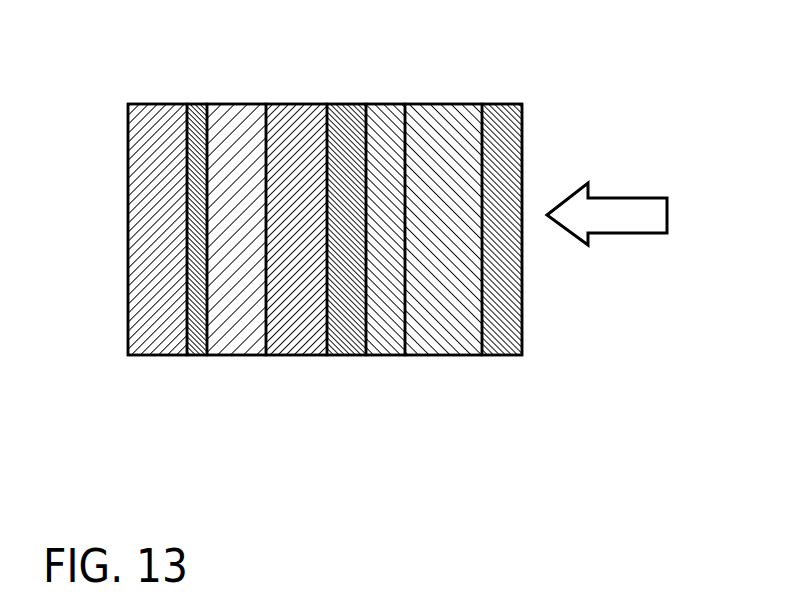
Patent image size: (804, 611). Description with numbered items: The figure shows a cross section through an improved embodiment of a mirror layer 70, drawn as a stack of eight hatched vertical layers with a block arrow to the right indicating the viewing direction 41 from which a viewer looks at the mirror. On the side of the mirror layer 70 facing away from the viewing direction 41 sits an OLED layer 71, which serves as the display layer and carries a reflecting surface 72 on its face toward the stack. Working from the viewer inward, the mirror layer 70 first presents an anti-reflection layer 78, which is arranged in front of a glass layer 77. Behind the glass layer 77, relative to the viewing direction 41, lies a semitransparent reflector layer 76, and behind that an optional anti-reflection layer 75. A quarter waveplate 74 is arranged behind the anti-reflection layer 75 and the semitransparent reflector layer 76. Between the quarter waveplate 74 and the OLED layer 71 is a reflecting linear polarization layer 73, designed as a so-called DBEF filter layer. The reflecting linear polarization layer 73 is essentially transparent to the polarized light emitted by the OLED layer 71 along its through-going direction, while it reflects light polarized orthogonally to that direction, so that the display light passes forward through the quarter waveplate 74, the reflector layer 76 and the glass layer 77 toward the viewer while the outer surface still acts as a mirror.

The mirror layer 70 is at (215, 457).
The OLED layer 71 is at (147, 163).
The reflecting surface 72 is at (195, 317).
The reflecting linear polarization layer 73 is at (247, 163).
The quarter waveplate 74 is at (315, 317).
The anti-reflection layer 75 is at (346, 165).
The semitransparent reflector layer 76 is at (388, 317).
The glass layer 77 is at (445, 165).
The anti-reflection layer 78 is at (500, 317).
The viewing direction 41 is at (637, 215).